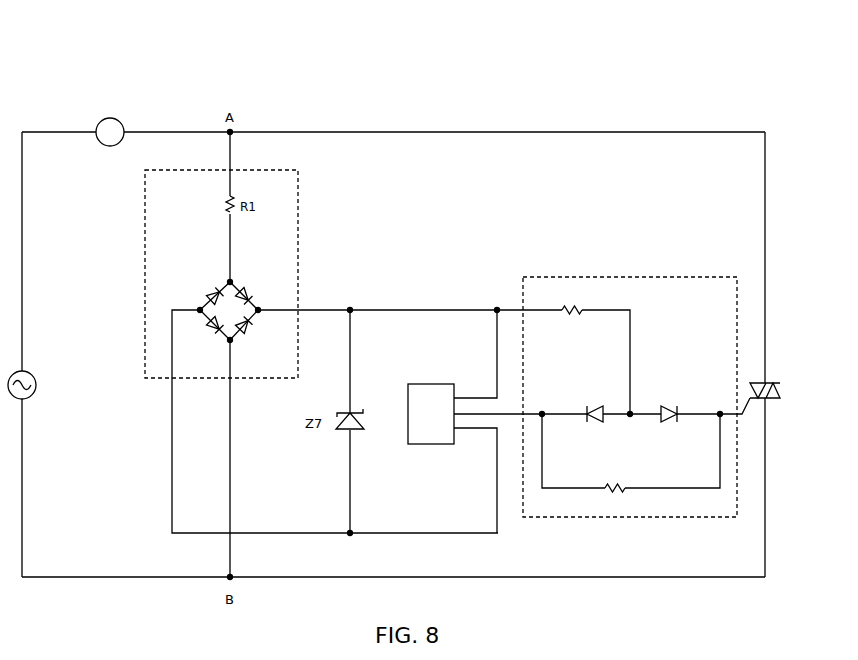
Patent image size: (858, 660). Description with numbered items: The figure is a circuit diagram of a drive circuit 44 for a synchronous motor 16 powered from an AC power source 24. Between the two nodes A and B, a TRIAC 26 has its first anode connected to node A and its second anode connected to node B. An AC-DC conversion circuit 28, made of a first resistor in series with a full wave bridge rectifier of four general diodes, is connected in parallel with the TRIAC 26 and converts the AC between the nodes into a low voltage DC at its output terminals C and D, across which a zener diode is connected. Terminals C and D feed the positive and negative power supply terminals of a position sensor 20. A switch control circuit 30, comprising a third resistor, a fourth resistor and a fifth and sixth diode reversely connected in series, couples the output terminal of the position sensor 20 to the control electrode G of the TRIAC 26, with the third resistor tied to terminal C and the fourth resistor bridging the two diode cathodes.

The synchronous motor 16 is at (101, 144).
The AC power source 24 is at (30, 372).
The AC-DC conversion circuit 28 is at (298, 233).
The switch control circuit 30 is at (632, 277).
The position sensor 20 is at (427, 384).
The TRIAC 26 is at (786, 388).
The drive circuit 44 is at (684, 112).